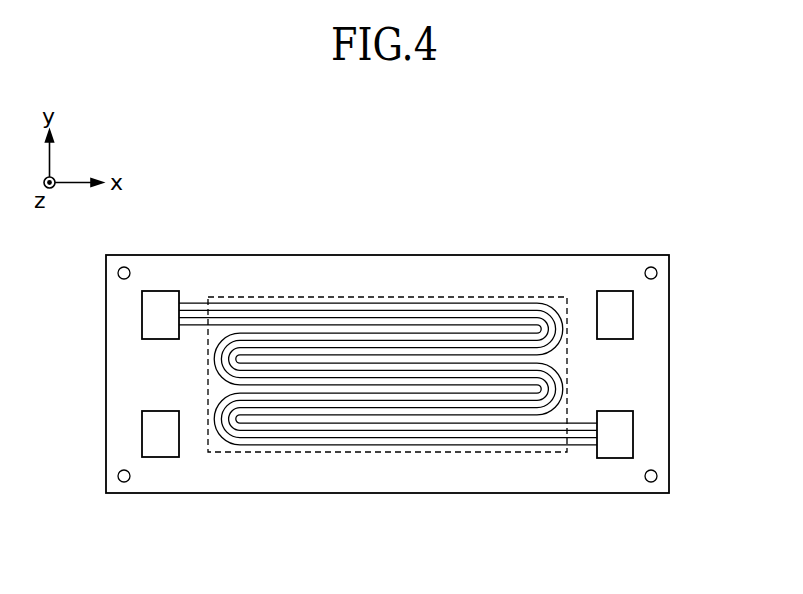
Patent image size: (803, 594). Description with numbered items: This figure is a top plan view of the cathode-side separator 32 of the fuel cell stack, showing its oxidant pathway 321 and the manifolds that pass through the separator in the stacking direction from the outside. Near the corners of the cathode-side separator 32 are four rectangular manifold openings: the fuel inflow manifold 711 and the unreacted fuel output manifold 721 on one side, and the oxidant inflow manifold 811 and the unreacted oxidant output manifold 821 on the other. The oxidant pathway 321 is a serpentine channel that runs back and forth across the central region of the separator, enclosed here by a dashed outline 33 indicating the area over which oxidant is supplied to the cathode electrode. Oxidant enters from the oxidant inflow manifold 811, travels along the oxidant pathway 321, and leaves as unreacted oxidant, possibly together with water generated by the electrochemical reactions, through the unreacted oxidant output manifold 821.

The cathode-side separator 32 is at (657, 302).
The heater region 33 is at (567, 359).
The oxidant pathway 321 is at (462, 320).
The oxidant inflow manifold 811 is at (158, 290).
The fuel inflow manifold 711 is at (613, 291).
The unreacted fuel output manifold 721 is at (158, 458).
The unreacted oxidant output manifold 821 is at (614, 459).